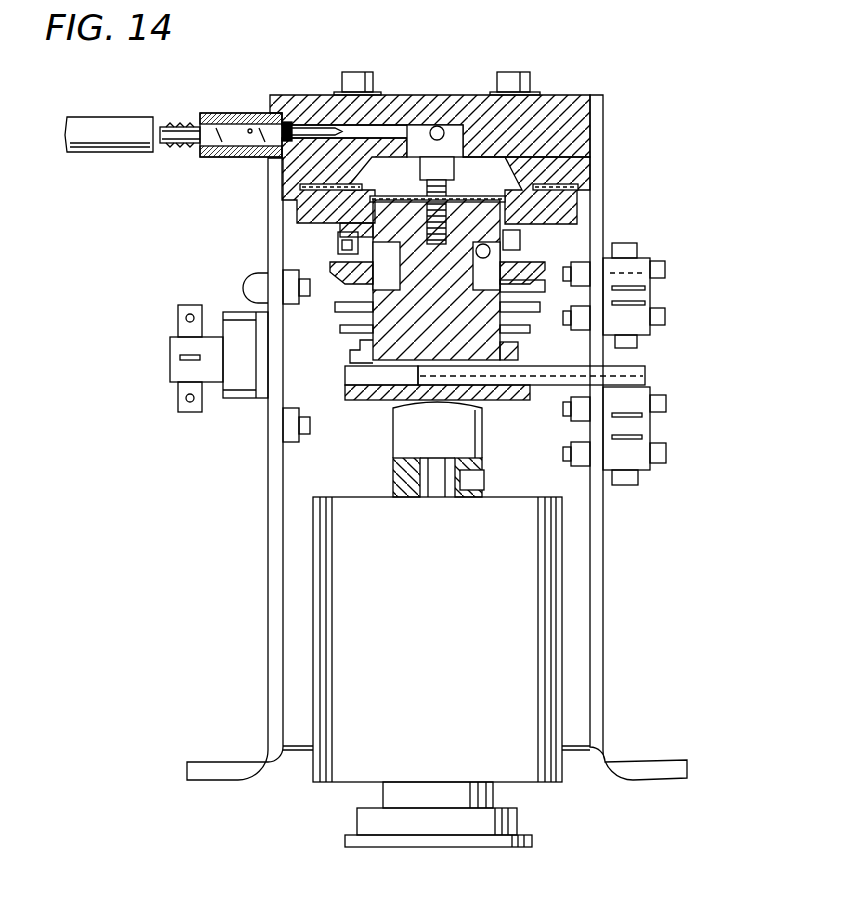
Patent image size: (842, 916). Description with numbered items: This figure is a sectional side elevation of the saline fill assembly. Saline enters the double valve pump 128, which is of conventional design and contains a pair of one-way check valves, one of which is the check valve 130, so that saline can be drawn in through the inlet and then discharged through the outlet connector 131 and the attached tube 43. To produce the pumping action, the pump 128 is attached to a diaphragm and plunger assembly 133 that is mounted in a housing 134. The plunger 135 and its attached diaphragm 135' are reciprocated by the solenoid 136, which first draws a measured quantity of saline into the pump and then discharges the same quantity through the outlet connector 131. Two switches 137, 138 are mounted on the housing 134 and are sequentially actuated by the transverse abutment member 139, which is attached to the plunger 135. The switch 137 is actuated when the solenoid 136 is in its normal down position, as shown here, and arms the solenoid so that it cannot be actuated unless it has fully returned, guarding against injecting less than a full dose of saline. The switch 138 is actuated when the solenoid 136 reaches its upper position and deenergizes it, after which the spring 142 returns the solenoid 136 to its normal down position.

The tube 43 is at (100, 118).
The outlet connector 131 is at (178, 124).
The one-way check valve 130 is at (307, 103).
The double valve pump 128 is at (423, 132).
The diaphragm 135' is at (453, 127).
The housing 134 is at (567, 212).
The switch 138 is at (643, 258).
The spring 142 is at (348, 330).
The plunger 135 is at (415, 370).
The diaphragm and plunger assembly 133 is at (492, 344).
The transverse abutment member 139 is at (640, 378).
The switch 137 is at (640, 450).
The solenoid 136 is at (452, 636).